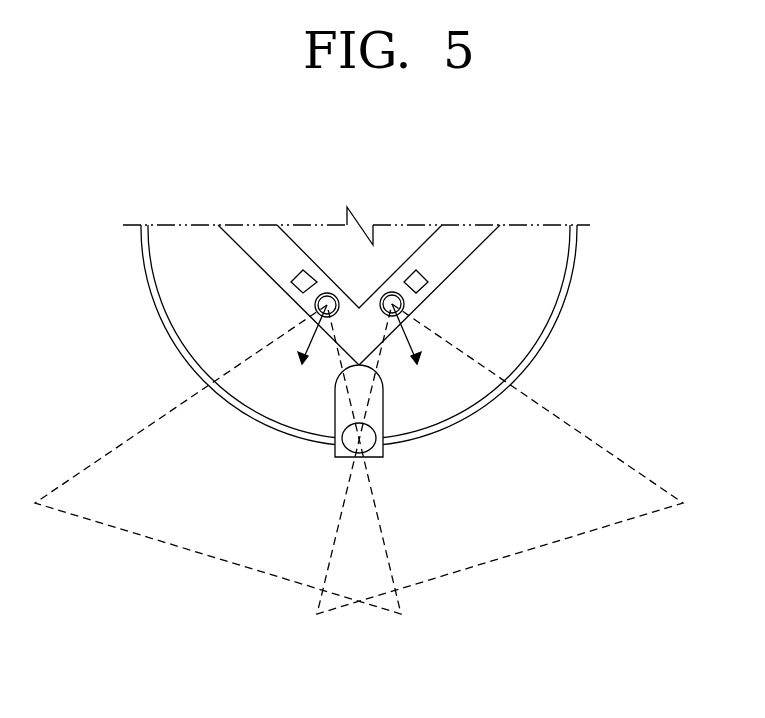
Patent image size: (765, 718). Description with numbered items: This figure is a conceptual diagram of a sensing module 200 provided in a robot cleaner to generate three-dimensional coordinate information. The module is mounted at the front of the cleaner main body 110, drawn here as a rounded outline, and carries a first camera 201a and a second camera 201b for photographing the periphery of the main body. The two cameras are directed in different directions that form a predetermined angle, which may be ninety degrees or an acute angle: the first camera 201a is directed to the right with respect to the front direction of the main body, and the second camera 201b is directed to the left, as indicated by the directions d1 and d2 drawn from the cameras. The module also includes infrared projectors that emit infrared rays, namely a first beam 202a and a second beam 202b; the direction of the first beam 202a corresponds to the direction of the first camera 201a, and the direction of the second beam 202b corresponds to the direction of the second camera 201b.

The cleaner main body 110 is at (548, 307).
The sensing module 200 is at (475, 232).
The first camera 201a is at (328, 293).
The second camera 201b is at (391, 292).
The first beam 202a is at (294, 275).
The second beam 202b is at (423, 273).
The first sensing direction d1 is at (305, 350).
The second sensing direction d2 is at (417, 350).